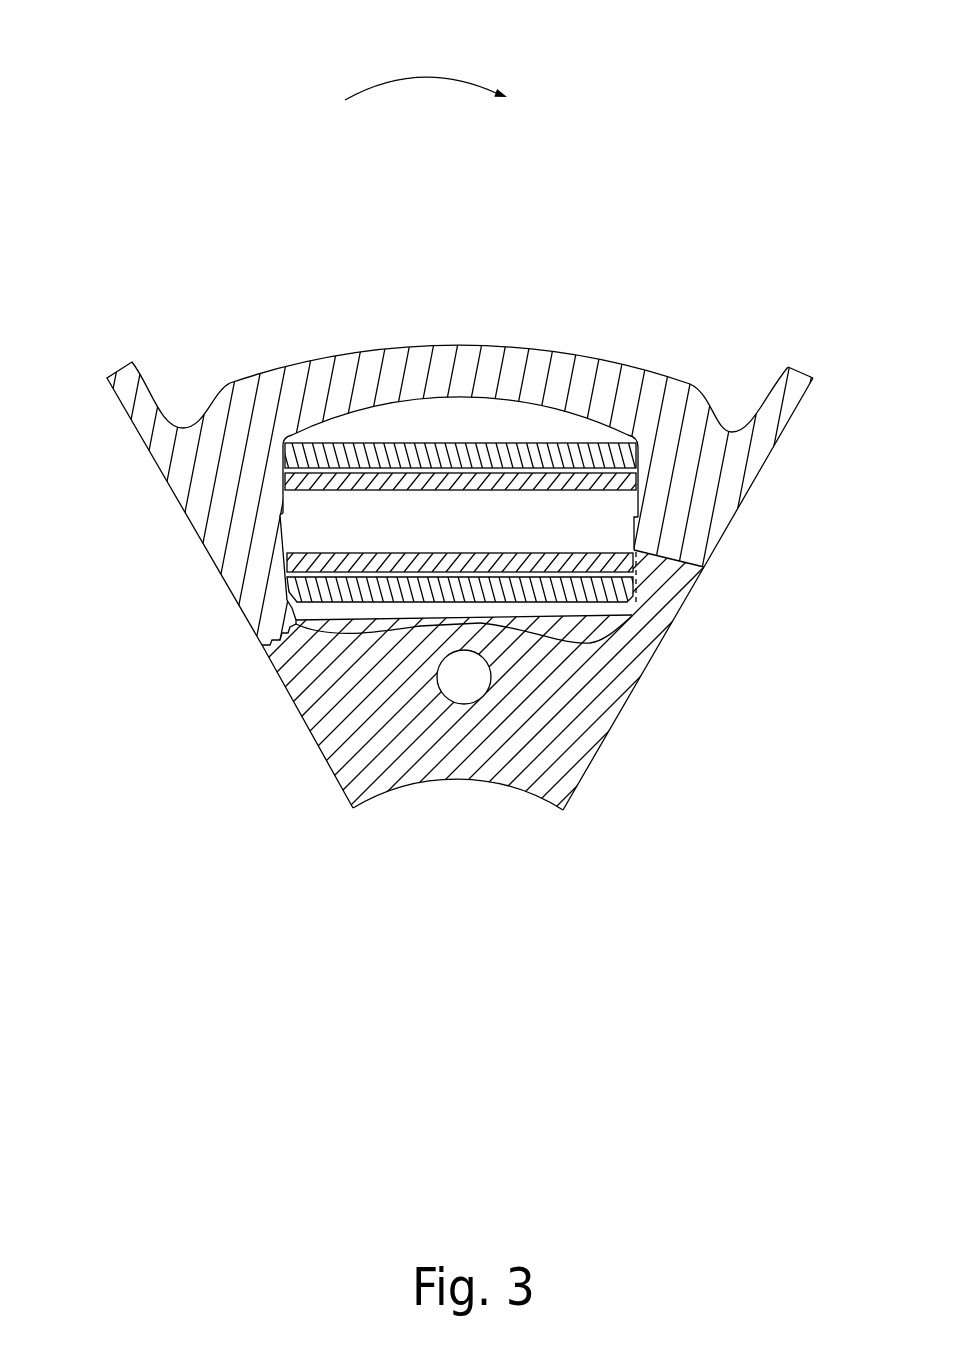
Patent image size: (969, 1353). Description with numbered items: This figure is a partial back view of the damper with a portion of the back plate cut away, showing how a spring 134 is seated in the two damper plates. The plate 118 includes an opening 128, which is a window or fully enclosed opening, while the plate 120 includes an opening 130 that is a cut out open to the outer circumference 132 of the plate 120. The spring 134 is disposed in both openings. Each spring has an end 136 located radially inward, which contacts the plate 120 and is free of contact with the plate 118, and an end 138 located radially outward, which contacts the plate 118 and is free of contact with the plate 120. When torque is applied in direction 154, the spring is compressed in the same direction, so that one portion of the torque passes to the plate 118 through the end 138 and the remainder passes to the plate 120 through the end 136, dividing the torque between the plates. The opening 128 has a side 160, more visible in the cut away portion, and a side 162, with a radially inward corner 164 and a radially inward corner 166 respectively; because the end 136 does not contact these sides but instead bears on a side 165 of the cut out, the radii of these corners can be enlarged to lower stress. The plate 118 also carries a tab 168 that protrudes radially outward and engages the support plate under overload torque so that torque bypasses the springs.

The plate 118 is at (579, 352).
The plate 120 is at (288, 698).
The opening 128 is at (476, 427).
The opening 130 is at (555, 613).
The outer circumference 132 is at (669, 625).
The spring 134 is at (400, 444).
The end 136 is at (298, 620).
The end 138 is at (311, 426).
The direction 154 is at (403, 78).
The side 160 is at (283, 498).
The side 162 is at (636, 498).
The radially inward corner 164 is at (312, 619).
The side 165 is at (632, 568).
The radially inward corner 166 is at (609, 614).
The tab 168 is at (806, 372).